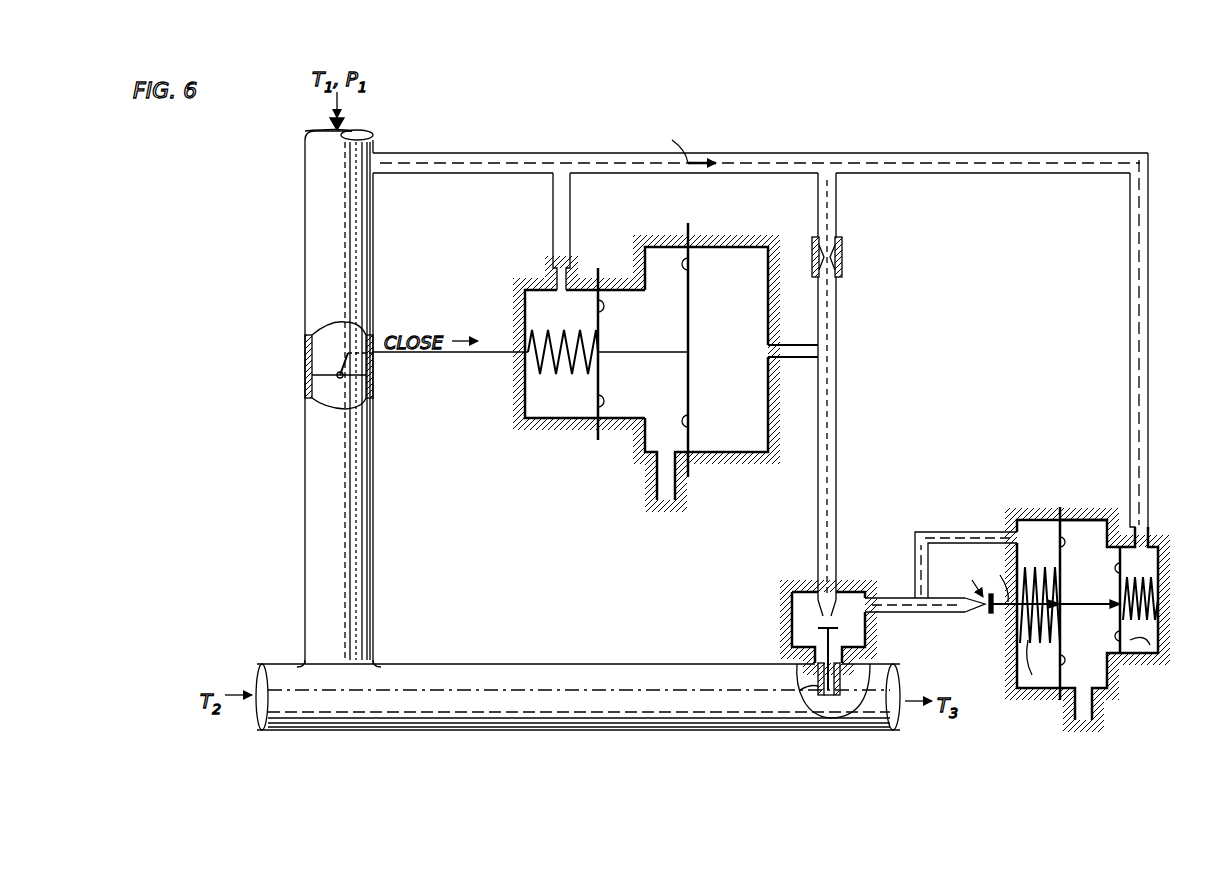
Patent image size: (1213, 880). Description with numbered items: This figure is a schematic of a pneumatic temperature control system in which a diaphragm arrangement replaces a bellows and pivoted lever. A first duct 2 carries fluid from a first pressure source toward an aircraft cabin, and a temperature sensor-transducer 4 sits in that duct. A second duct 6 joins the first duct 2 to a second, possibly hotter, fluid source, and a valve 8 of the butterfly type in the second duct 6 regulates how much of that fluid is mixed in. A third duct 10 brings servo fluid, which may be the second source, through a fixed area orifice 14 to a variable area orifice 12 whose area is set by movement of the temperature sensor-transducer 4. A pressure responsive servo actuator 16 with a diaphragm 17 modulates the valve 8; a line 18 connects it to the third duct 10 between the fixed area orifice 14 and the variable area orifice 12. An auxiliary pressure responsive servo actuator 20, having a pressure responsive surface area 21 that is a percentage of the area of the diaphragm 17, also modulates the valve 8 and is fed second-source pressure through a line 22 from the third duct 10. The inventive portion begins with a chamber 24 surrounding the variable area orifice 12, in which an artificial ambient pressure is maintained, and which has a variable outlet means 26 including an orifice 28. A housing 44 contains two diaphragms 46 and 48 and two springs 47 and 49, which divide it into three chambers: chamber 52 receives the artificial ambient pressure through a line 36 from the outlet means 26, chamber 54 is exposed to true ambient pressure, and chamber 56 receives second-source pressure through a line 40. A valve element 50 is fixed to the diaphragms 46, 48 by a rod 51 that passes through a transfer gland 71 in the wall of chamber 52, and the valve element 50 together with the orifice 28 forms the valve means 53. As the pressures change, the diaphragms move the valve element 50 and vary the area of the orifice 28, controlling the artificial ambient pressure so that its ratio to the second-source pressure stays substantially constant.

The first duct 2 is at (533, 664).
The temperature sensor-transducer 4 is at (818, 681).
The second duct 6 is at (310, 232).
The valve 8 is at (320, 373).
The third duct 10 is at (725, 153).
The variable area orifice 12 is at (800, 625).
The fixed area orifice 14 is at (840, 252).
The pressure responsive servo actuator 16 is at (733, 455).
The diaphragm 17 is at (688, 383).
The line 18 is at (808, 345).
The auxiliary pressure responsive servo actuator 20 is at (545, 420).
The pressure responsive surface area 21 is at (602, 297).
The line 22 is at (553, 201).
The chamber 24 is at (790, 600).
The variable outlet means 26 is at (901, 597).
The orifice 28 is at (982, 610).
The line 36 is at (966, 532).
The line 40 is at (995, 150).
The housing 44 is at (1020, 700).
The diaphragm 46 is at (1058, 558).
The spring 47 is at (1017, 670).
The diaphragm 48 is at (1110, 573).
The spring 49 is at (1156, 578).
The valve element 50 is at (992, 614).
The rod 51 is at (1100, 612).
The chamber 52 is at (1045, 520).
The valve means 53 is at (962, 578).
The chamber 54 is at (1086, 520).
The chamber 56 is at (1140, 655).
The transfer gland 71 is at (994, 583).